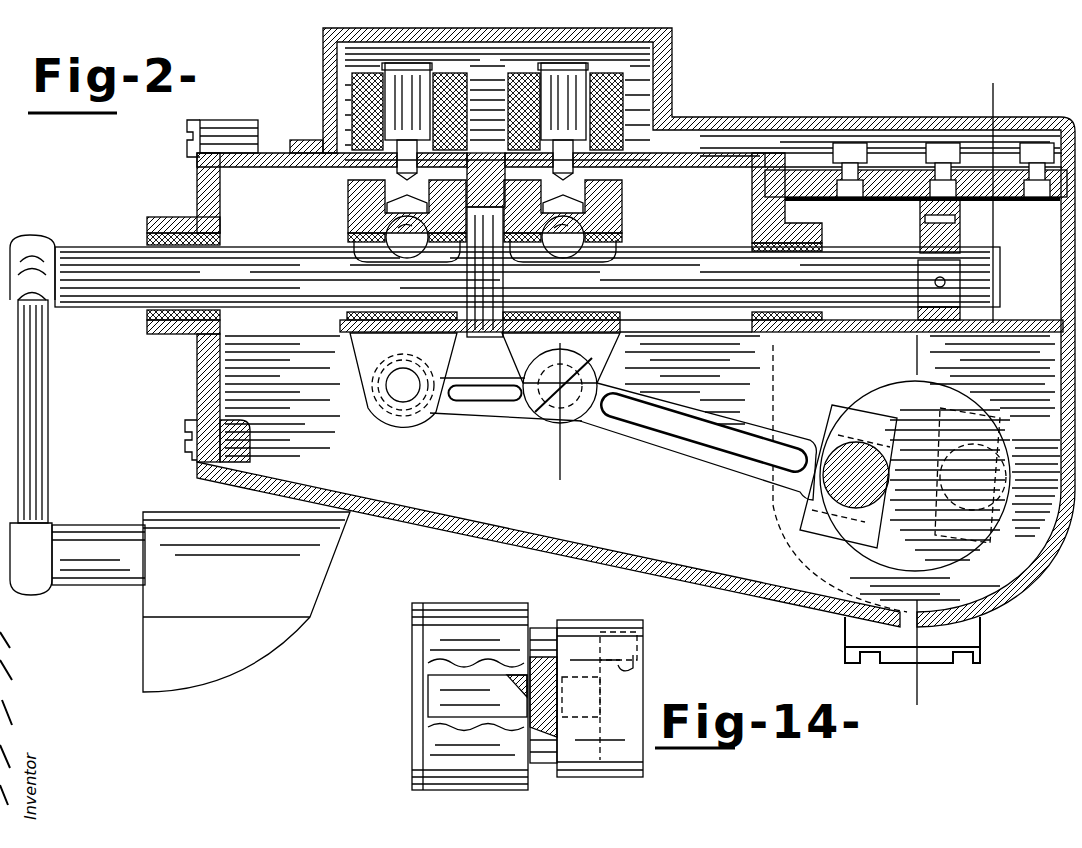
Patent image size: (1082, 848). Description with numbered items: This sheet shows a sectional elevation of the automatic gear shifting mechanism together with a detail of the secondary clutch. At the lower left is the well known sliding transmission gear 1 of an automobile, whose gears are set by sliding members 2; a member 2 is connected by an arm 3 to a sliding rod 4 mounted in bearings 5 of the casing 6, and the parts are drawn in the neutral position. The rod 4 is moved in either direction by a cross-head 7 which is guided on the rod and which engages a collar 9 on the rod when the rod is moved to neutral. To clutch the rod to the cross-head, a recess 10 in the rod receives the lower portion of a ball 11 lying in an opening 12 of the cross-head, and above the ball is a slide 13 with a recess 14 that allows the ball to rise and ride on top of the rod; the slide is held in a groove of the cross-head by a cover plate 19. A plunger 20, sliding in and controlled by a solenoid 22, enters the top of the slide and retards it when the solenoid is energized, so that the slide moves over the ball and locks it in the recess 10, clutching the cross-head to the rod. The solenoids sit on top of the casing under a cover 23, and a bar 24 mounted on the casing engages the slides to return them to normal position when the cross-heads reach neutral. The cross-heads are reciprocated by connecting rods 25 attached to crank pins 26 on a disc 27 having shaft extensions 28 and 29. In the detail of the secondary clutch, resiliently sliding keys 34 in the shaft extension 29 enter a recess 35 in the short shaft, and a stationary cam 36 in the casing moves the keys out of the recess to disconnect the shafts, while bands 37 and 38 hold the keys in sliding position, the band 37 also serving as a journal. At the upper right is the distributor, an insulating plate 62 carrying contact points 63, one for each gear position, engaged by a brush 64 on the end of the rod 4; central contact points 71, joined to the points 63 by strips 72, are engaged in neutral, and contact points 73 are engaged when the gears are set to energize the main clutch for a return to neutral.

In FIG. 2, the sliding transmission gear 1 is at (246, 602).
In FIG. 2, the sliding member 2 is at (90, 525).
In FIG. 2, the arm 3 is at (36, 436).
In FIG. 2, the sliding rod 4 is at (100, 250).
In FIG. 2, the bearing 5 is at (157, 220).
In FIG. 2, the casing 6 is at (477, 513).
In FIG. 2, the cross-head 7 is at (346, 226).
In FIG. 2, the collar 9 is at (472, 328).
In FIG. 2, the recess 10 is at (360, 256).
In FIG. 2, the ball 11 is at (405, 248).
In FIG. 2, the opening 12 is at (350, 205).
In FIG. 2, the slide 13 is at (365, 220).
In FIG. 2, the recess 14 is at (612, 190).
In FIG. 2, the cover plate 19 is at (620, 183).
In FIG. 2, the plunger 20 is at (680, 100).
In FIG. 2, the solenoid 22 is at (355, 95).
In FIG. 2, the cover 23 is at (660, 118).
In FIG. 2, the bar 24 is at (482, 180).
In FIG. 2, the connecting rod 25 is at (483, 397).
In FIG. 2, the crank pin 26 is at (830, 468).
In FIG. 2, the disc 27 is at (888, 398).
In FIG. 2, the shaft extension 28 is at (913, 510).
In FIG. 14, the shaft extension 29 is at (418, 603).
In FIG. 14, the sliding key 34 is at (477, 695).
In FIG. 14, the recess 35 is at (620, 660).
In FIG. 14, the stationary cam 36 is at (545, 700).
In FIG. 14, the band 37 is at (465, 603).
In FIG. 14, the band 38 is at (600, 680).
In FIG. 2, the plate 62 is at (890, 185).
In FIG. 2, the contact point 63 is at (832, 165).
In FIG. 2, the brush 64 is at (965, 207).
In FIG. 2, the contact point 71 is at (938, 165).
In FIG. 2, the strip 72 is at (865, 150).
In FIG. 2, the contact point 73 is at (1030, 165).